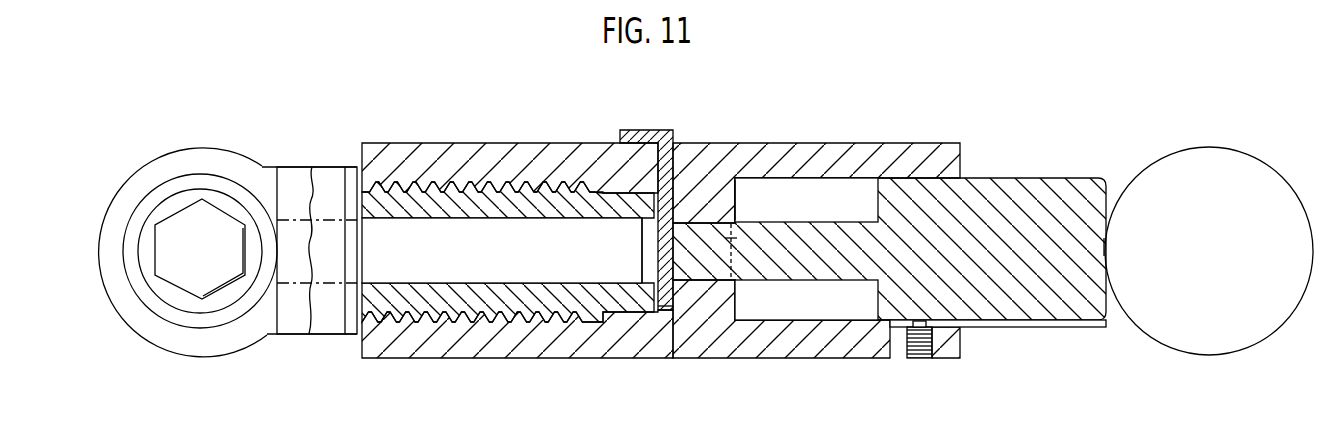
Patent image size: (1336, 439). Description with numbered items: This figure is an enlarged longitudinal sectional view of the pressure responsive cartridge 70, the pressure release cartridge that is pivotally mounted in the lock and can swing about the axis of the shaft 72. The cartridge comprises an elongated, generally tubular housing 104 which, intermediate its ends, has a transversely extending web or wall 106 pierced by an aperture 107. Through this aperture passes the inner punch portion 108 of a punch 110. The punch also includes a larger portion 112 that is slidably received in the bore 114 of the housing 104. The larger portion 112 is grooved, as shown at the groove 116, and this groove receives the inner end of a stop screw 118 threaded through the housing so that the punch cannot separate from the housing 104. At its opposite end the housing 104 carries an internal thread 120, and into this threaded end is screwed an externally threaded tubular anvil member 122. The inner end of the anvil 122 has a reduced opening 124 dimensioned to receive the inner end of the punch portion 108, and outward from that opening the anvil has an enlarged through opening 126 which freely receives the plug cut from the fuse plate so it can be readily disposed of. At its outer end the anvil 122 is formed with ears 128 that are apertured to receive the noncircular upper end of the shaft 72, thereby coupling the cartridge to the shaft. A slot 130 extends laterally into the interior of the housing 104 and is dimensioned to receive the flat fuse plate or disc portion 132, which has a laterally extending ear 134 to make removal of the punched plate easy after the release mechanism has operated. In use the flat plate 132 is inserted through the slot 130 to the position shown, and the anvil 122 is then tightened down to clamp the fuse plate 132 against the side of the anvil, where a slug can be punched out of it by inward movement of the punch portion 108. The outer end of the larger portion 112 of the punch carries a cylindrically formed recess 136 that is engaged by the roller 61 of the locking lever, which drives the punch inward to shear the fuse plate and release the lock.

The roller 61 is at (1196, 148).
The pressure responsive cartridge 70 is at (410, 121).
The shaft 72 is at (213, 223).
The housing 104 is at (489, 142).
The web 106 is at (735, 193).
The aperture 107 is at (733, 236).
The inner punch portion 108 is at (803, 283).
The punch 110 is at (1024, 177).
The larger portion 112 is at (1070, 306).
The bore 114 is at (818, 178).
The groove 116 is at (1016, 327).
The stop screw 118 is at (926, 352).
The internal thread 120 is at (560, 314).
The anvil member 122 is at (475, 308).
The reduced opening 124 is at (652, 224).
The enlarged through opening 126 is at (452, 219).
The ears 128 is at (206, 148).
The slot 130 is at (690, 143).
The fuse plate 132 is at (666, 309).
The ear 134 is at (638, 130).
The recess 136 is at (1104, 244).